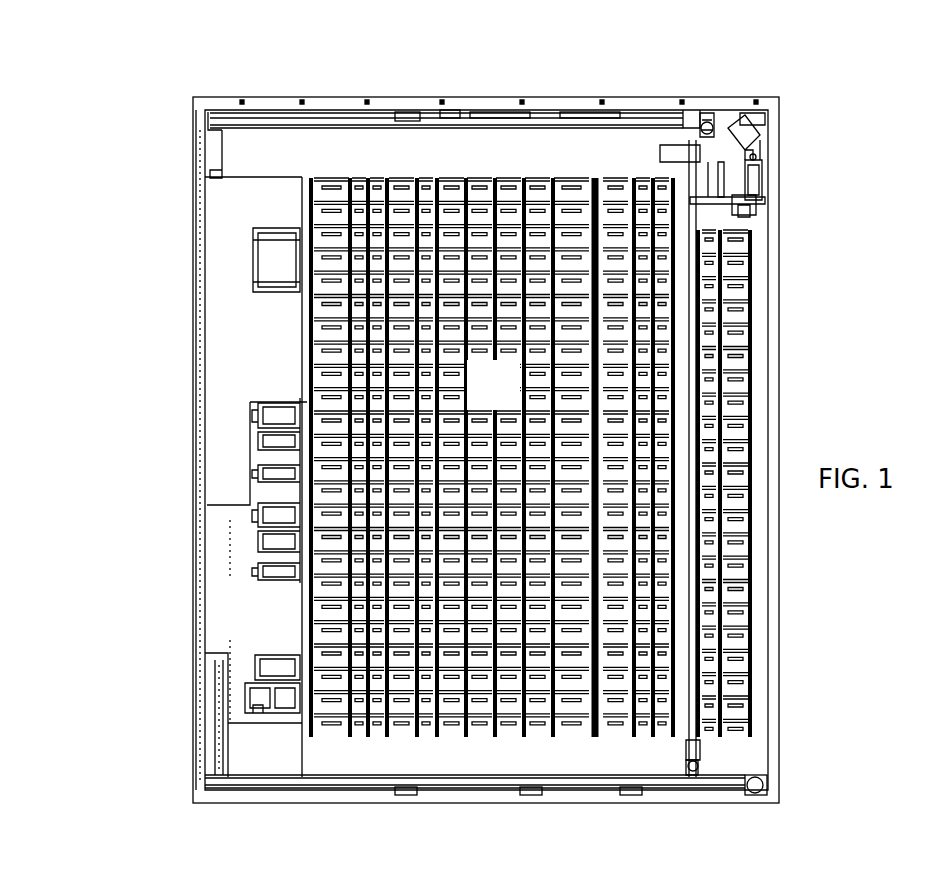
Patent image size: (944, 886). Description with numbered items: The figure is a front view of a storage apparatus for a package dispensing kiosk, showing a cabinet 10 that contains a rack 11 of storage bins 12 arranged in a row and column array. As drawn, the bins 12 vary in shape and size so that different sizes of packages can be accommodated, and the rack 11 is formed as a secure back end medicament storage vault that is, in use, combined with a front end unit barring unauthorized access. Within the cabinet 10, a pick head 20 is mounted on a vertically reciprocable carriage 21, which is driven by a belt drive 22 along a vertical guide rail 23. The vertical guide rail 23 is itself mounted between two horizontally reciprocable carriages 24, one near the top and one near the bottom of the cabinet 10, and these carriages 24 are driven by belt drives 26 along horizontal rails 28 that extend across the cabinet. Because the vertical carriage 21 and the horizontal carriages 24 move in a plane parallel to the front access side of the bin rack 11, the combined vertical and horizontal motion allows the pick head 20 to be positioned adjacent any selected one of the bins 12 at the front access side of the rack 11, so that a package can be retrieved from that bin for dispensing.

The cabinet 10 is at (150, 545).
The rack 11 is at (505, 397).
The storage bins 12 is at (318, 528).
The pick head 20 is at (784, 155).
The vertically reciprocable carriage 21 is at (762, 152).
The belt drive 22 is at (662, 150).
The vertical guide rail 23 is at (705, 210).
The horizontally reciprocable carriages 24 is at (706, 128).
The belt drives 26 is at (437, 110).
The horizontal rails 28 is at (396, 128).